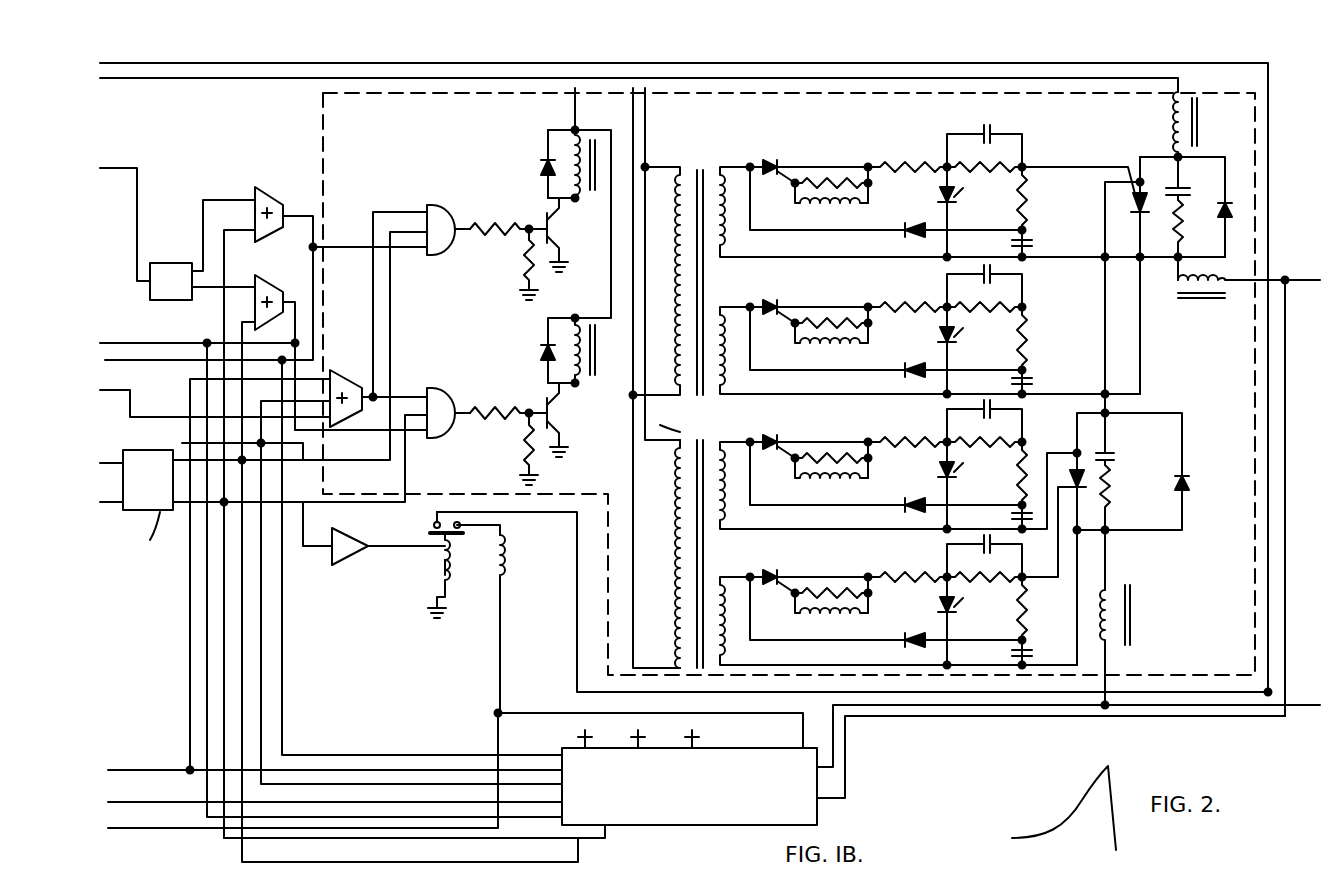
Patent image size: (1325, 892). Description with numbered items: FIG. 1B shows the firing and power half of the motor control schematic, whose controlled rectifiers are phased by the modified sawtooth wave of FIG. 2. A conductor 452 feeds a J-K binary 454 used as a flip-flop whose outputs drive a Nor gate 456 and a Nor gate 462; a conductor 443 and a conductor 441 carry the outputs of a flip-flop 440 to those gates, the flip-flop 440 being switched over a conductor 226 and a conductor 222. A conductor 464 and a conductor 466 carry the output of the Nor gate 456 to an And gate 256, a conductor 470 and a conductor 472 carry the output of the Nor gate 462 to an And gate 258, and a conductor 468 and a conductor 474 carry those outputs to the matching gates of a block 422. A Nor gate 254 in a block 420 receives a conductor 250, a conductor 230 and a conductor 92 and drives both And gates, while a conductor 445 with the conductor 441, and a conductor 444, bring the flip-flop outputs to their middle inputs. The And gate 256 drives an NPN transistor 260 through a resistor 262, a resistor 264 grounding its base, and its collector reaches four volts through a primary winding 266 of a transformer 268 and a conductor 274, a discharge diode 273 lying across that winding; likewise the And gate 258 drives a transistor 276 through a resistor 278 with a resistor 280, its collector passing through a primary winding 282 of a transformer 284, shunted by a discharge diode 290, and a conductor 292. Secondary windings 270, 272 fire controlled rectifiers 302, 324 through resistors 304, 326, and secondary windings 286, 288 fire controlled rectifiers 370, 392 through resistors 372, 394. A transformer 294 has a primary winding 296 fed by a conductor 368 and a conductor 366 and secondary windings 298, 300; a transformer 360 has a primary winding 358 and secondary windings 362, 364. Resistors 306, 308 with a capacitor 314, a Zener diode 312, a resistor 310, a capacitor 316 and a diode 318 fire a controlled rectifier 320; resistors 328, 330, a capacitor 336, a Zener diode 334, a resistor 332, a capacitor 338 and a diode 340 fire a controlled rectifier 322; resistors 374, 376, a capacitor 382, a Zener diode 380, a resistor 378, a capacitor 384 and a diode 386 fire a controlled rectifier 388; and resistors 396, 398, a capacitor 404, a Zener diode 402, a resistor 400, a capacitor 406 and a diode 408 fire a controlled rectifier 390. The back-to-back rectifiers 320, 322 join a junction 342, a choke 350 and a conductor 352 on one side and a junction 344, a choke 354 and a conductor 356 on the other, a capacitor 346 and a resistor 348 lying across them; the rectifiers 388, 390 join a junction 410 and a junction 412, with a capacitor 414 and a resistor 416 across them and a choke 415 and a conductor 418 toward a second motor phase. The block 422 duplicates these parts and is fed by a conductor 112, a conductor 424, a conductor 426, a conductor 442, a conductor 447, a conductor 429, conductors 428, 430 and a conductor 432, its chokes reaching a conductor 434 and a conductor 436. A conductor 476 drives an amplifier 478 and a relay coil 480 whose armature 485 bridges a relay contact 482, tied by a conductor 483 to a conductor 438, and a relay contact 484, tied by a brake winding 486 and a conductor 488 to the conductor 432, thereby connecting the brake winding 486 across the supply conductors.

The conductor 438 is at (180, 66).
The conductor 352 is at (180, 80).
The block 420 is at (322, 135).
The conductor 452 is at (118, 167).
The J-K binary 454 is at (168, 264).
The Nor gate 456 is at (268, 188).
The conductor 464 is at (304, 214).
The conductor 443 is at (222, 232).
The Nor gate 462 is at (268, 276).
The conductor 470 is at (296, 300).
The conductor 441 is at (242, 322).
The conductor 466 is at (356, 248).
The conductor 250 is at (190, 662).
The conductor 230 is at (120, 440).
The conductor 92 is at (136, 408).
The conductor 226 is at (106, 462).
The conductor 222 is at (108, 506).
The flip-flop 440 is at (164, 536).
The conductor 444 is at (182, 530).
The conductor 445 is at (342, 460).
The conductor 472 is at (340, 432).
The Nor gate 254 is at (346, 416).
The conductor 476 is at (304, 518).
The amplifier 478 is at (350, 560).
The relay contact 482 is at (434, 524).
The armature 485 is at (430, 534).
The relay contact 484 is at (458, 538).
The relay coil 480 is at (440, 562).
The brake winding 486 is at (510, 548).
The conductor 488 is at (498, 636).
The conductor 483 is at (577, 606).
The conductor 432 is at (112, 830).
The conductor 112 is at (148, 800).
The conductor 474 is at (206, 818).
The conductor 447 is at (222, 838).
The conductor 442 is at (242, 862).
The conductor 468 is at (284, 712).
The conductor 426 is at (262, 672).
The conductor 424 is at (362, 768).
The block 422 is at (712, 826).
The conductor 429 is at (575, 735).
The conductor 428 is at (628, 735).
The conductor 430 is at (709, 735).
The conductor 436 is at (847, 798).
The conductor 434 is at (952, 716).
The conductor 418 is at (1306, 706).
The conductor 356 is at (1283, 276).
The And gate 256 is at (446, 206).
The resistor 262 is at (498, 240).
The resistor 264 is at (524, 278).
The NPN transistor 260 is at (556, 226).
The transformer 268 is at (592, 138).
The conductor 274 is at (573, 118).
The discharge diode 273 is at (542, 158).
The primary winding 266 is at (562, 176).
The conductor 292 is at (610, 276).
The discharge diode 290 is at (540, 346).
The primary winding 282 is at (578, 382).
The transformer 284 is at (596, 368).
The And gate 258 is at (452, 392).
The resistor 278 is at (502, 408).
The resistor 280 is at (526, 440).
The NPN transistor 276 is at (560, 418).
The conductor 366 is at (638, 132).
The conductor 368 is at (646, 106).
The primary winding 296 is at (678, 390).
The secondary winding 300 is at (704, 390).
The transformer 360 is at (677, 428).
The primary winding 358 is at (676, 490).
The transformer 294 is at (712, 162).
The secondary winding 298 is at (714, 254).
The secondary winding 362 is at (712, 526).
The secondary winding 364 is at (716, 580).
The controlled rectifier 302 is at (770, 158).
The resistor 304 is at (830, 176).
The secondary winding 270 is at (800, 204).
The resistor 306 is at (908, 160).
The capacitor 314 is at (986, 124).
The resistor 308 is at (996, 172).
The Zener diode 312 is at (960, 189).
The resistor 310 is at (1028, 192).
The capacitor 316 is at (1032, 246).
The diode 318 is at (904, 234).
The controlled rectifier 324 is at (808, 293).
The resistor 326 is at (833, 310).
The secondary winding 272 is at (815, 338).
The resistor 328 is at (909, 287).
The capacitor 336 is at (1002, 283).
The resistor 330 is at (986, 322).
The Zener diode 334 is at (924, 350).
The resistor 332 is at (1043, 338).
The capacitor 338 is at (1044, 372).
The diode 340 is at (886, 344).
The controlled rectifier 370 is at (808, 432).
The resistor 372 is at (833, 446).
The secondary winding 286 is at (814, 468).
The resistor 374 is at (909, 422).
The capacitor 382 is at (999, 418).
The resistor 376 is at (986, 455).
The Zener diode 380 is at (924, 485).
The resistor 378 is at (1001, 473).
The capacitor 384 is at (995, 516).
The diode 386 is at (886, 482).
The controlled rectifier 392 is at (808, 567).
The resistor 394 is at (833, 582).
The secondary winding 288 is at (813, 610).
The resistor 396 is at (905, 559).
The capacitor 404 is at (967, 556).
The resistor 398 is at (986, 592).
The Zener diode 402 is at (923, 621).
The resistor 400 is at (1040, 608).
The capacitor 406 is at (996, 651).
The diode 408 is at (886, 619).
The controlled rectifier 322 is at (1134, 164).
The choke 350 is at (1172, 112).
The junction 342 is at (1176, 156).
The controlled rectifier 320 is at (1230, 200).
The capacitor 346 is at (1172, 200).
The resistor 348 is at (1184, 226).
The junction 344 is at (1180, 288).
The choke 354 is at (1218, 302).
The junction 410 is at (1108, 412).
The controlled rectifier 390 is at (1068, 495).
The capacitor 414 is at (1114, 458).
The resistor 416 is at (1110, 510).
The junction 412 is at (1106, 532).
The controlled rectifier 388 is at (1190, 478).
The choke 415 is at (1134, 612).